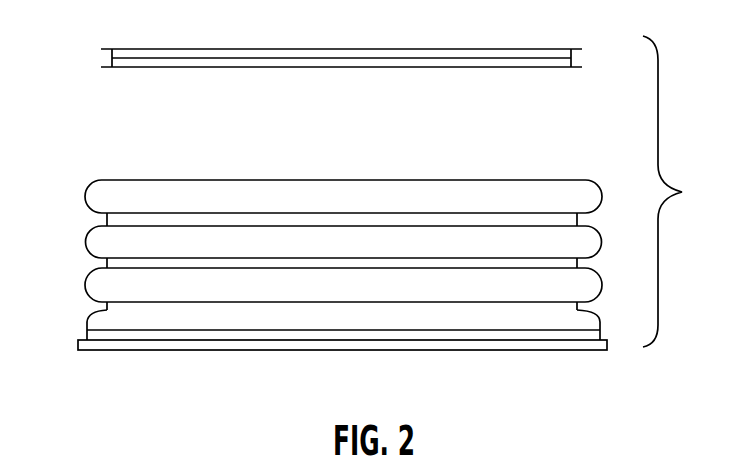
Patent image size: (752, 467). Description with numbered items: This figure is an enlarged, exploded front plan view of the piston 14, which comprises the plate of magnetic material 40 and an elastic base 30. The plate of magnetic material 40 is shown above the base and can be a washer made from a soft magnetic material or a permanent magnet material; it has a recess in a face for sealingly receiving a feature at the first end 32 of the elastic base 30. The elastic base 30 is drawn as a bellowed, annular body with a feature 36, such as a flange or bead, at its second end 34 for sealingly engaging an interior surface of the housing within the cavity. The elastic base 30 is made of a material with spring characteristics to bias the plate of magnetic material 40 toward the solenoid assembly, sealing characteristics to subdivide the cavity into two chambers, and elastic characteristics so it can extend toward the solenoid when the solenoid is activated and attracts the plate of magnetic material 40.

The piston 14 is at (681, 191).
The elastic base 30 is at (314, 224).
The first end 32 is at (538, 180).
The second end 34 is at (543, 352).
The feature 36 is at (135, 352).
The plate of magnetic material 40 is at (509, 49).